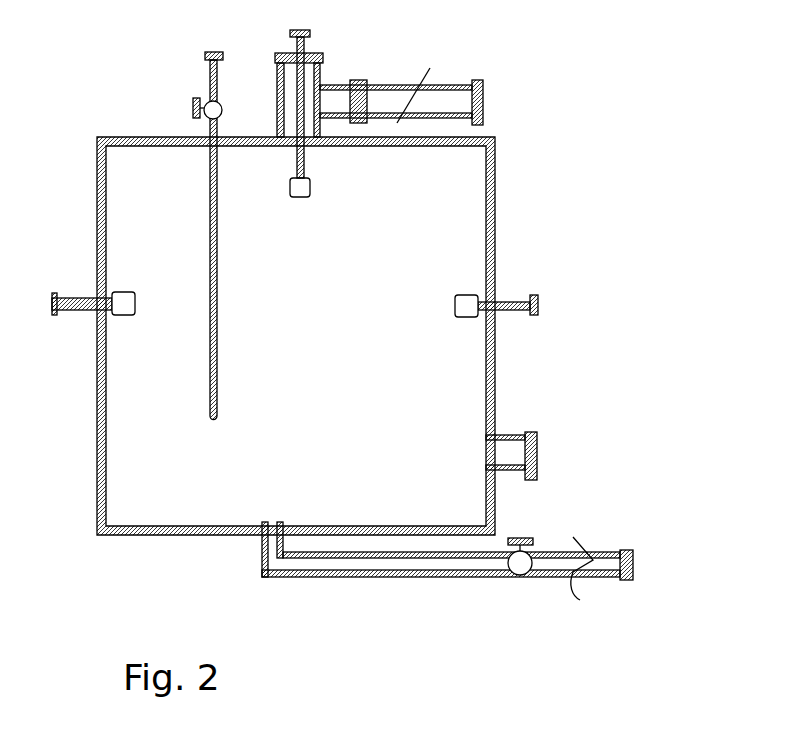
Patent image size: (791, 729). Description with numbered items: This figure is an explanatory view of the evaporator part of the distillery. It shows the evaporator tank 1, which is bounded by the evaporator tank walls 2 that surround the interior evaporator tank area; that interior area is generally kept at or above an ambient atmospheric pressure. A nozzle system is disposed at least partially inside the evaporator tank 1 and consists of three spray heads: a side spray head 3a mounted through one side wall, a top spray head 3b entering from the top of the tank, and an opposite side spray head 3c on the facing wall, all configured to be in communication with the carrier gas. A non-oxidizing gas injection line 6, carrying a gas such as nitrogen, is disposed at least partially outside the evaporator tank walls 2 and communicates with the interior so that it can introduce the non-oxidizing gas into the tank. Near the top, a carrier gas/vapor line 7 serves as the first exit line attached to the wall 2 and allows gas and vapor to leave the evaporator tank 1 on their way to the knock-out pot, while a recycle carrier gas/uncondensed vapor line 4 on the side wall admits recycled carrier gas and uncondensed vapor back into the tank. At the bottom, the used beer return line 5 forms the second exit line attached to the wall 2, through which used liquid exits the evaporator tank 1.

The evaporator tank 1 is at (346, 322).
The evaporator tank walls 2 is at (418, 177).
The side spray head 3a is at (137, 290).
The top spray head 3b is at (312, 192).
The opposite side spray head 3c is at (453, 320).
The recycle carrier gas/uncondensed vapor line 4 is at (508, 433).
The used beer return line 5 is at (607, 577).
The non-oxidizing gas injection line 6 is at (207, 70).
The carrier gas/vapor line 7 is at (455, 75).